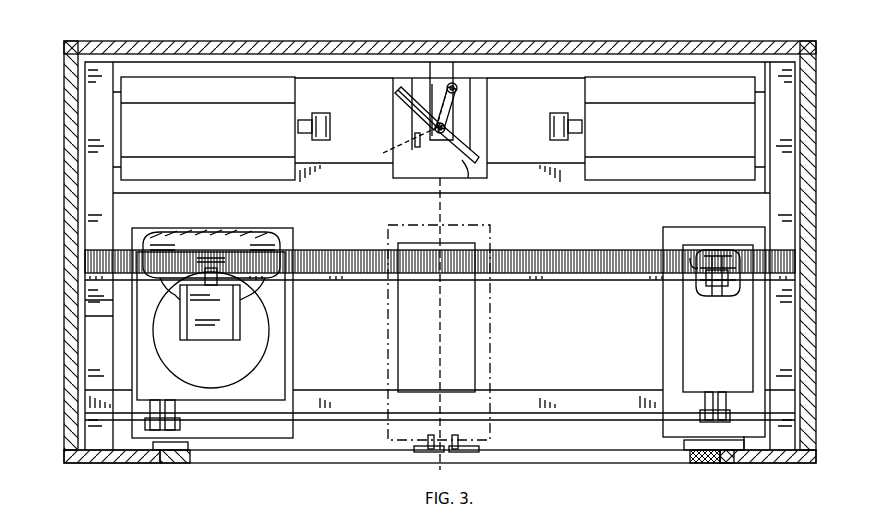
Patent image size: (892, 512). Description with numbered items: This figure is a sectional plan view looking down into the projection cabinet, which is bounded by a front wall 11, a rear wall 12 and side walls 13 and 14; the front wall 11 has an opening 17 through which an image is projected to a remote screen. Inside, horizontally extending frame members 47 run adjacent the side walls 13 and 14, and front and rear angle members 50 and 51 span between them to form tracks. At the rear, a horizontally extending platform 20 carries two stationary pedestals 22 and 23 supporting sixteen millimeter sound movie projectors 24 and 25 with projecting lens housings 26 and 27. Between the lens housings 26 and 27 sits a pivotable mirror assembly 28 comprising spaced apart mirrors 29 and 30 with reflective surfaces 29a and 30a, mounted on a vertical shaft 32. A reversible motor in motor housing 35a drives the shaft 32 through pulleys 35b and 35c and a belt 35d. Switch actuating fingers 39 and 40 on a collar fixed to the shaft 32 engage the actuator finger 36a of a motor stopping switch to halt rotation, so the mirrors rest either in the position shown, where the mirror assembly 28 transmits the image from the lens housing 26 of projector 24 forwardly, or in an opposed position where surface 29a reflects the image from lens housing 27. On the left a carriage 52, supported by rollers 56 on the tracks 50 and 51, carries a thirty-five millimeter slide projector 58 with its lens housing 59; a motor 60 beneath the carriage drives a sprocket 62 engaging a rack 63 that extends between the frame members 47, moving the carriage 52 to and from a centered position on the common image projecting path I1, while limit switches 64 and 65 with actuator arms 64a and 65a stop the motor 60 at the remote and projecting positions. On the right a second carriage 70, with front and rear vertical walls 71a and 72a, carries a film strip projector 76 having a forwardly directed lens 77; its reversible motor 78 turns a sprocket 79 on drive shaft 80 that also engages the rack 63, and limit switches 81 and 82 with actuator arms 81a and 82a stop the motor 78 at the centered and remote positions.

The front wall 11 is at (104, 460).
The rear wall 12 is at (158, 42).
The side wall 13 is at (72, 353).
The side wall 14 is at (810, 338).
The opening 17 is at (688, 450).
The horizontally extending platform 20 is at (536, 62).
The pedestal 22 is at (276, 175).
The pedestal 23 is at (624, 180).
The movie projector 24 is at (217, 134).
The movie projector 25 is at (675, 134).
The projecting lens housing 26 is at (314, 138).
The projecting lens housing 27 is at (580, 133).
The pivotable mirror assembly 28 is at (424, 188).
The mirror 29 is at (390, 84).
The reflective surface 29a is at (470, 148).
The mirror 30 is at (464, 182).
The reflective surface 30a is at (400, 98).
The vertical shaft 32 is at (432, 128).
The motor housing 35a is at (434, 78).
The pulley 35b is at (400, 146).
The pulley 35c is at (458, 86).
The belt 35d is at (458, 106).
The actuator finger 36a is at (396, 174).
The switch actuating finger 39 is at (440, 129).
The switch actuating finger 40 is at (460, 128).
The horizontally extending member 47 is at (86, 311).
The front angle member 50 is at (350, 394).
The rear angle member 51 is at (352, 252).
The carriage 52 is at (296, 311).
The roller 56 is at (150, 240).
The slide projector 58 is at (280, 352).
The projecting lens housing 59 is at (144, 426).
The motor 60 is at (205, 340).
The sprocket 62 is at (200, 258).
The rack 63 is at (304, 262).
The limit switch 64 is at (172, 442).
The actuator arm 64a is at (166, 463).
The limit switch 65 is at (426, 454).
The actuator arm 65a is at (426, 440).
The carriage 70 is at (660, 311).
The front vertically extending wall 71a is at (760, 452).
The rear vertically extending wall 72a is at (704, 228).
The film strip projector 76 is at (727, 361).
The lens 77 is at (702, 416).
The motor 78 is at (720, 298).
The sprocket 79 is at (690, 258).
The drive shaft 80 is at (710, 298).
The limit switch 81 is at (466, 454).
The actuator arm 81a is at (460, 440).
The limit switch 82 is at (700, 463).
The actuator arm 82a is at (728, 463).
The common image projecting path I1 is at (438, 330).